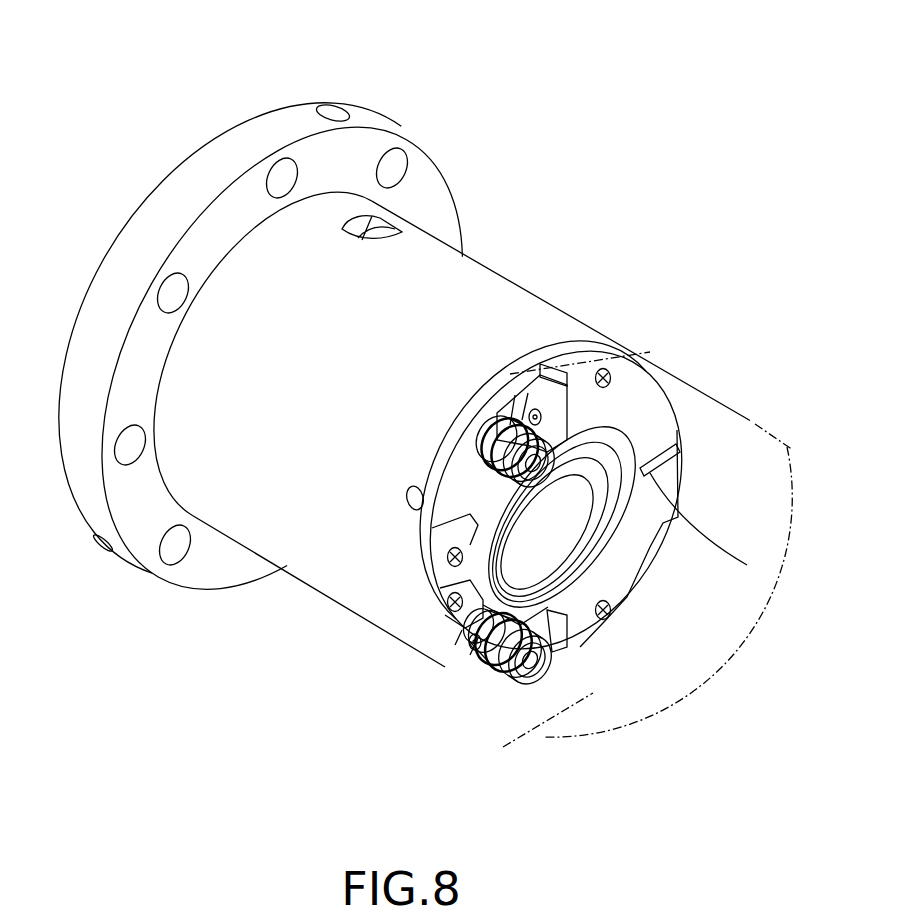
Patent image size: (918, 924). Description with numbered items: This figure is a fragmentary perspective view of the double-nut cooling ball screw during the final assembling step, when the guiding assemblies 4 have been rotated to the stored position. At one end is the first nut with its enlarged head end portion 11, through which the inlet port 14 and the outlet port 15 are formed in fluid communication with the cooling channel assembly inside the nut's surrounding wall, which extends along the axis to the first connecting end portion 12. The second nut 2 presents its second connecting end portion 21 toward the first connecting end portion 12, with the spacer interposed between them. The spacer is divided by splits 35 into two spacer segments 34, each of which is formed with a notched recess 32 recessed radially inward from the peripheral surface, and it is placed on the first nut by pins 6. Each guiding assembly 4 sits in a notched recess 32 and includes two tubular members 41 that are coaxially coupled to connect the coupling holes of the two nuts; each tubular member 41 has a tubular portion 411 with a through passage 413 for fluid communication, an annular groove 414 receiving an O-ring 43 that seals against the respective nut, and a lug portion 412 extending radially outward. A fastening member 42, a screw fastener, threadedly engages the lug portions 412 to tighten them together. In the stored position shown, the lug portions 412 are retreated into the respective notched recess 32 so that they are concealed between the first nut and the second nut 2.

The head end portion 11 is at (172, 200).
The inlet port 14 is at (330, 112).
The outlet port 15 is at (102, 548).
The first connecting end portion 12 is at (590, 333).
The second nut 2 is at (717, 397).
The second connecting end portion 21 is at (661, 367).
The spacer segment 34 is at (660, 413).
The notched recess 32 is at (468, 490).
The split 35 is at (480, 563).
The pin 6 is at (607, 377).
The guiding assembly 4 is at (577, 515).
The tubular member 41 is at (497, 420).
The lug portion 412 is at (528, 393).
The fastening member 42 is at (535, 410).
The through passage 413 is at (533, 463).
The tubular portion 411 is at (533, 662).
The annular groove 414 is at (441, 603).
The O-ring 43 is at (492, 455).